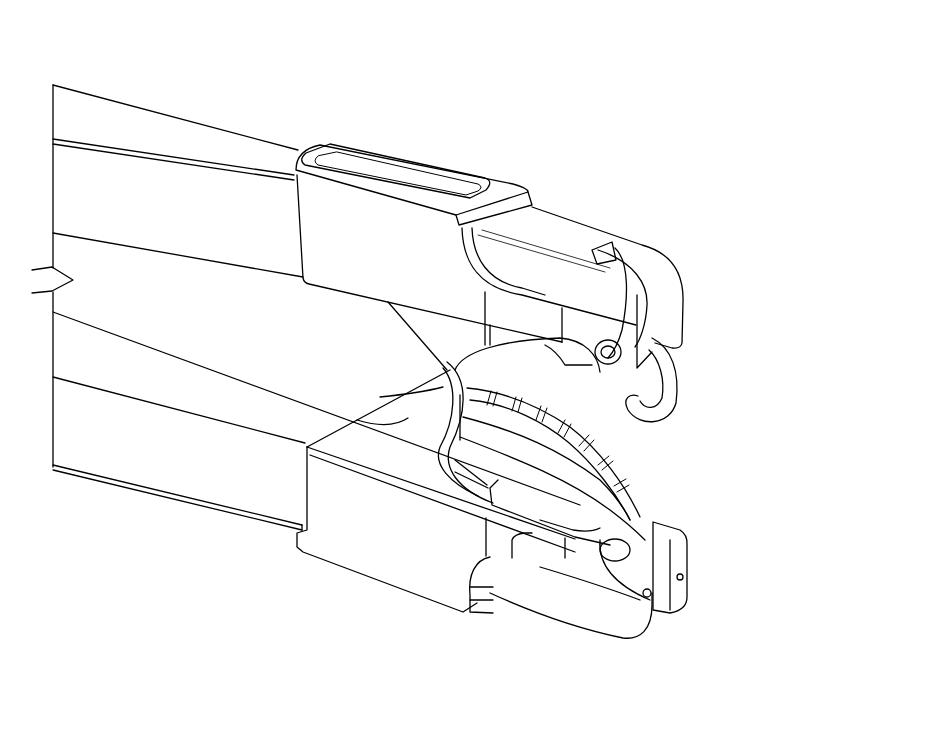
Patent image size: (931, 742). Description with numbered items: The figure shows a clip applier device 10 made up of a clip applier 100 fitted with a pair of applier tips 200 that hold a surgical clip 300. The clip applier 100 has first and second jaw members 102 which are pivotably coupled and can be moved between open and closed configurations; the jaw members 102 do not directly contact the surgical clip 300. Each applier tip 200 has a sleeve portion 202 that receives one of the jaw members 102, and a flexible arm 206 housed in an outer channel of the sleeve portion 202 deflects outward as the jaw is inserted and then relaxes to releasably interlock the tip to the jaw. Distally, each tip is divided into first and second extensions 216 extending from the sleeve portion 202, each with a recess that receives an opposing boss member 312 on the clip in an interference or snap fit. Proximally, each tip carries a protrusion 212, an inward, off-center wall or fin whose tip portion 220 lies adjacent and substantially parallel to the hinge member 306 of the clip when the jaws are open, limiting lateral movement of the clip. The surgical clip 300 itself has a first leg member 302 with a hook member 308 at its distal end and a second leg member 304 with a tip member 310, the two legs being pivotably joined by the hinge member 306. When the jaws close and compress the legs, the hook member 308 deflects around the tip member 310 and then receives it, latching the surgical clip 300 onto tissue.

The clip applier device 10 is at (660, 54).
The clip applier 100 is at (236, 114).
The jaw members 102 is at (240, 240).
The applier tips 200 is at (473, 129).
The sleeve portion 202 is at (343, 275).
The flexible arm 206 is at (380, 167).
The protrusion 212 is at (408, 418).
The extensions 216 is at (528, 300).
The tip portion 220 is at (435, 370).
The surgical clip 300 is at (659, 474).
The first leg member 302 is at (560, 373).
The second leg member 304 is at (597, 452).
The hinge member 306 is at (453, 457).
The hook member 308 is at (670, 395).
The tip member 310 is at (683, 605).
The boss members 312 is at (655, 260).